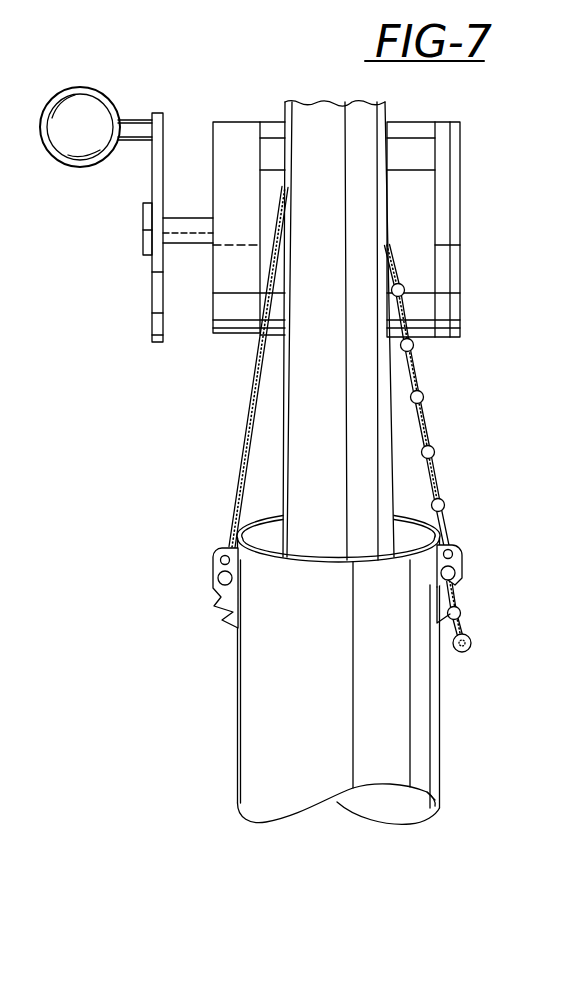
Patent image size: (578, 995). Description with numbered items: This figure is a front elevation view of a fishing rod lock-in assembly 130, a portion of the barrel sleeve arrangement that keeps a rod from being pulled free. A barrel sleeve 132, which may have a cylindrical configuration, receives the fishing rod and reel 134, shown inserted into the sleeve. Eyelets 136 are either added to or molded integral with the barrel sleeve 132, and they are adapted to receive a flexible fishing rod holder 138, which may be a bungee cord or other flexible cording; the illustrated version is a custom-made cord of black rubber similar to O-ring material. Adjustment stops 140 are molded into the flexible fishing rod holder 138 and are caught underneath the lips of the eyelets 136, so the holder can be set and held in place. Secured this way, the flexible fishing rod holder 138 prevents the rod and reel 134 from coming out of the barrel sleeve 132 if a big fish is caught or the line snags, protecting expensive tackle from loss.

The fishing rod lock-in assembly 130 is at (472, 434).
The barrel sleeve 132 is at (318, 667).
The fishing rod and reel 134 is at (236, 125).
The eyelets 136 is at (228, 622).
The flexible fishing rod holder 138 is at (237, 472).
The adjustment stops 140 is at (445, 504).